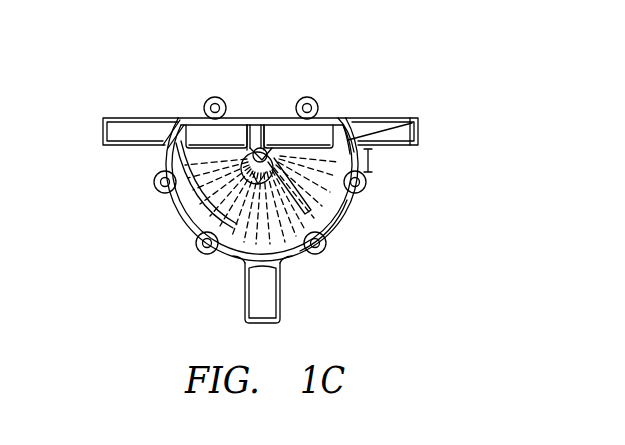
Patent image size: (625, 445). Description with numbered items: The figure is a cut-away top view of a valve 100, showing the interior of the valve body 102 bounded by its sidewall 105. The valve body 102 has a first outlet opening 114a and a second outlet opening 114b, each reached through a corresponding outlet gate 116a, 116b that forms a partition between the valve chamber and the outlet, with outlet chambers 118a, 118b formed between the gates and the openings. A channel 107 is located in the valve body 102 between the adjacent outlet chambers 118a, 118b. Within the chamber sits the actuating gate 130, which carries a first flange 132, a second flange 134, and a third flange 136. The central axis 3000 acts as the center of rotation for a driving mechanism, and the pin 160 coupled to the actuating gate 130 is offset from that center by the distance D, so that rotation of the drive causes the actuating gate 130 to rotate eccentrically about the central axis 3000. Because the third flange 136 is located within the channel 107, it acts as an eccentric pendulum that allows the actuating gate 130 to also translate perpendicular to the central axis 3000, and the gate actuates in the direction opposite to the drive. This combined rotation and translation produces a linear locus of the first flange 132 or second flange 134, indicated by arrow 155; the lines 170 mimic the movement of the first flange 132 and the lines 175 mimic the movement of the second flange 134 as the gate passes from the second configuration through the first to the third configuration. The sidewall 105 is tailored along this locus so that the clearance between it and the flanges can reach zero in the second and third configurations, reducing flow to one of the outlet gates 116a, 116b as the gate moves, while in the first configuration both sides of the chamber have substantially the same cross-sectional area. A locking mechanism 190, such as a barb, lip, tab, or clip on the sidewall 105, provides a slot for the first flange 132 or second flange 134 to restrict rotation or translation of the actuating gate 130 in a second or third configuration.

The valve 100 is at (444, 48).
The valve body 102 is at (325, 117).
The sidewall 105 is at (293, 255).
The channel 107 is at (265, 117).
The first outlet opening 114a is at (383, 117).
The second outlet opening 114b is at (122, 115).
The first outlet gate 116a is at (418, 118).
The second outlet gate 116b is at (173, 153).
The first outlet chamber 118a is at (337, 117).
The second outlet chamber 118b is at (207, 113).
The actuating gate 130 is at (337, 198).
The first flange 132 is at (330, 223).
The second flange 134 is at (163, 185).
The third flange 136 is at (272, 117).
The arrow 155 is at (172, 197).
The pin 160 is at (256, 150).
The lines 170 is at (365, 182).
The lines 175 is at (230, 257).
The locking mechanism 190 is at (408, 140).
The central axis 3000 is at (190, 238).
The distance D is at (379, 163).